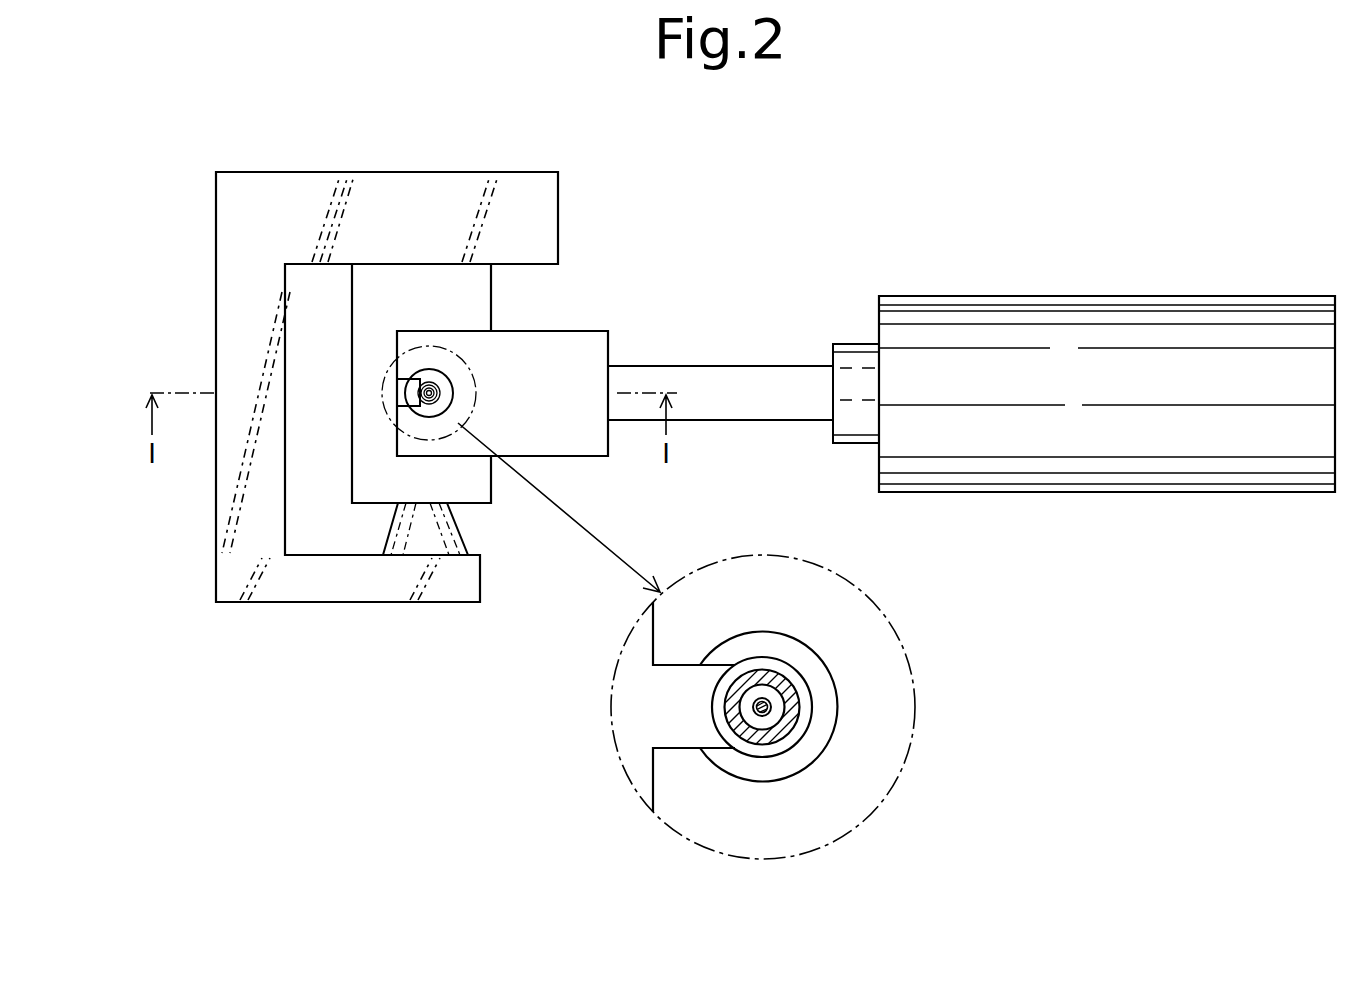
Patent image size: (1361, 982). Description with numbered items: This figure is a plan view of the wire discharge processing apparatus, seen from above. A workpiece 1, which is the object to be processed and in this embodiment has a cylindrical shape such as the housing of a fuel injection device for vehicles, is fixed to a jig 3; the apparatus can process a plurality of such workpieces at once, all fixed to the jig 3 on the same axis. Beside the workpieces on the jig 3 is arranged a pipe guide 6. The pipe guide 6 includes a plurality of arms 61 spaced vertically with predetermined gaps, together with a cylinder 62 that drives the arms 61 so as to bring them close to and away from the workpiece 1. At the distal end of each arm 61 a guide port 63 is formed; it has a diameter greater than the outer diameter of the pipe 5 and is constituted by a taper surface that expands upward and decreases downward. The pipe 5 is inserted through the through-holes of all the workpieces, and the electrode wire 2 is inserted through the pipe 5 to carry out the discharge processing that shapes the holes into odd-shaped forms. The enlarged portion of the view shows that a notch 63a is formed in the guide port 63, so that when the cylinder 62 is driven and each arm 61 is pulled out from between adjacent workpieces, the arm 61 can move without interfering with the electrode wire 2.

The workpiece 1 is at (492, 302).
The electrode wire 2 is at (781, 697).
The jig 3 is at (354, 172).
The pipe 5 is at (762, 750).
The pipe guide 6 is at (794, 305).
The arm 61 is at (588, 331).
The cylinder 62 is at (1014, 296).
The guide port 63 is at (818, 735).
The notch 63a is at (686, 713).